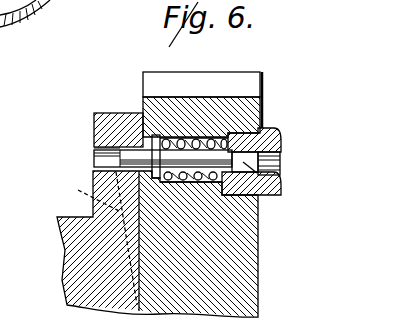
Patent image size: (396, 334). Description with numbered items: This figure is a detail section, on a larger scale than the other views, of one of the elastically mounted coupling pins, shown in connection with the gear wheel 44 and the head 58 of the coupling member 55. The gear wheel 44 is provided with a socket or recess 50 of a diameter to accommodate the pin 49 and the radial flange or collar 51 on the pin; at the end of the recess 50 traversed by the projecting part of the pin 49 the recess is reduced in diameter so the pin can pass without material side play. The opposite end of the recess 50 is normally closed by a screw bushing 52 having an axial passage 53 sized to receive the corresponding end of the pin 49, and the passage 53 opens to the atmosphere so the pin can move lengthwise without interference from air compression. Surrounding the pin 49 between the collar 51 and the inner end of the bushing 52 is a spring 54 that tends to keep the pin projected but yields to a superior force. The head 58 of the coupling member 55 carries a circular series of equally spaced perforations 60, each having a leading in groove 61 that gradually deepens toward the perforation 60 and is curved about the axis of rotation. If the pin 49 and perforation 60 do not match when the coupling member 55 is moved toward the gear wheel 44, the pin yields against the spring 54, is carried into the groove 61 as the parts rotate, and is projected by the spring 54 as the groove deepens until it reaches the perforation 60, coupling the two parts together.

The gear wheel 44 is at (250, 79).
The pin 49 is at (184, 86).
The recess 50 is at (207, 138).
The radial flange or collar 51 is at (156, 135).
The screw bushing 52 is at (279, 128).
The axial passage 53 is at (278, 191).
The spring 54 is at (263, 107).
The coupling member 55 is at (62, 258).
The head 58 is at (94, 117).
The perforation 60 is at (103, 163).
The leading in groove 61 is at (93, 238).